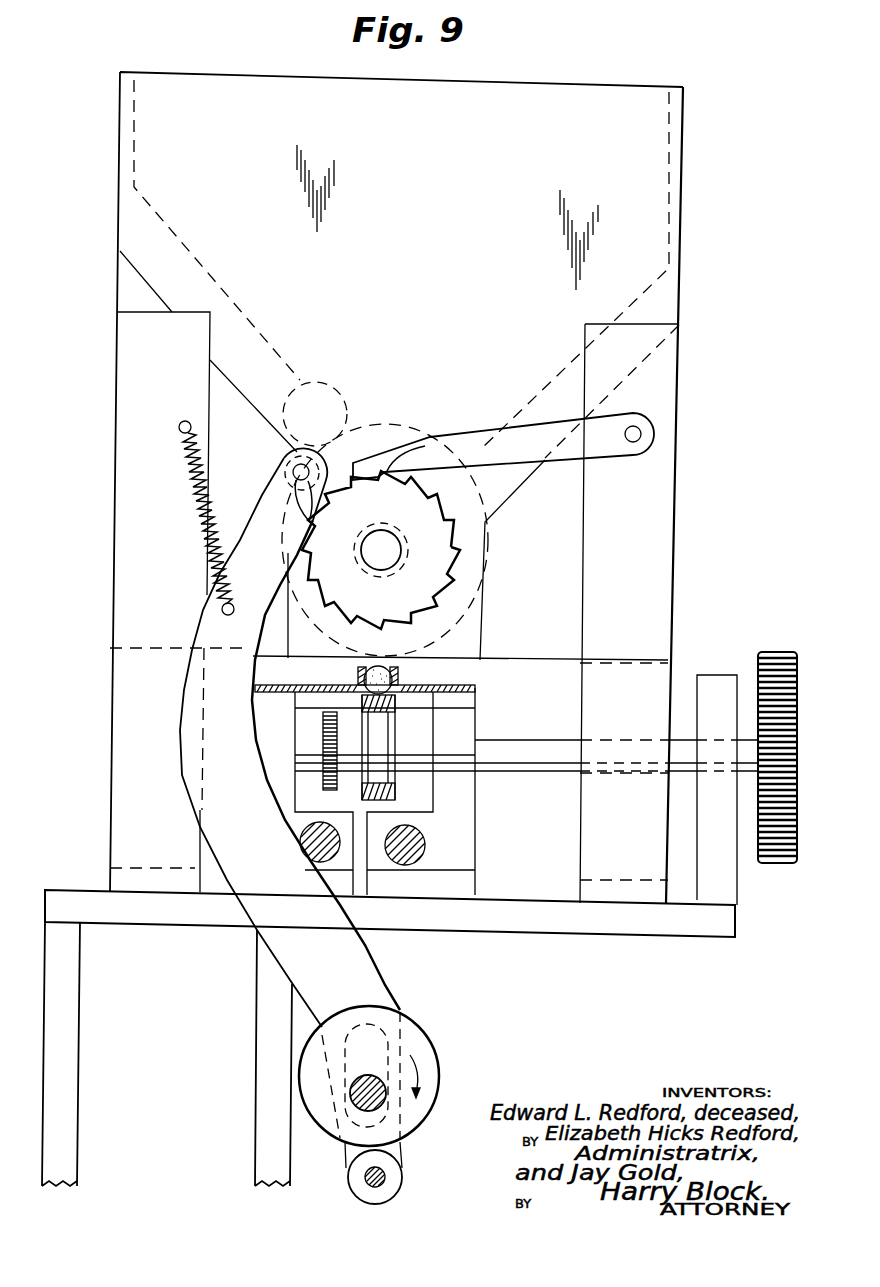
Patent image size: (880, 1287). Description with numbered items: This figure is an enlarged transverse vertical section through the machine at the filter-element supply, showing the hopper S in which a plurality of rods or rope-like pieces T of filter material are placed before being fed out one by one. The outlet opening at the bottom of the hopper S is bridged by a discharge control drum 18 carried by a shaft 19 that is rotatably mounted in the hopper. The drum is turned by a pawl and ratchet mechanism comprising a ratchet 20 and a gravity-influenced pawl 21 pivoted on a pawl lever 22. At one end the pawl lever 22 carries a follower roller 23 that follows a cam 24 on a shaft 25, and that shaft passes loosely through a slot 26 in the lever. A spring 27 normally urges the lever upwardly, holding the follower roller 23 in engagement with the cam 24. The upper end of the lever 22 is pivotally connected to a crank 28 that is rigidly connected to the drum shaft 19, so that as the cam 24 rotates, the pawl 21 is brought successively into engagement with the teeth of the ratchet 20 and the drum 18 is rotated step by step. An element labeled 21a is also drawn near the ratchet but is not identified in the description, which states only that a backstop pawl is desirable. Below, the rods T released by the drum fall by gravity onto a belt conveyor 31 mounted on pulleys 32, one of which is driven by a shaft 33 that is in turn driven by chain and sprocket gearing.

The hopper S is at (112, 313).
The rods or rope-like pieces T is at (395, 690).
The discharge control drum 18 is at (503, 440).
The shaft 19 is at (383, 550).
The ratchet 20 is at (455, 573).
The pawl 21 is at (289, 499).
The holding pawl 21a is at (465, 445).
The pawl lever 22 is at (187, 698).
The follower roller 23 is at (403, 1178).
The cam 24 is at (435, 1070).
The shaft 25 is at (360, 1090).
The slot 26 is at (400, 1025).
The spring 27 is at (213, 552).
The crank 28 is at (316, 466).
The belt conveyor 31 is at (475, 706).
The pulleys 32 is at (380, 785).
The shaft 33 is at (540, 770).